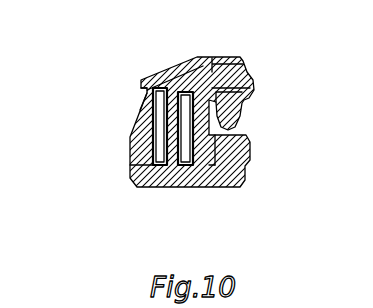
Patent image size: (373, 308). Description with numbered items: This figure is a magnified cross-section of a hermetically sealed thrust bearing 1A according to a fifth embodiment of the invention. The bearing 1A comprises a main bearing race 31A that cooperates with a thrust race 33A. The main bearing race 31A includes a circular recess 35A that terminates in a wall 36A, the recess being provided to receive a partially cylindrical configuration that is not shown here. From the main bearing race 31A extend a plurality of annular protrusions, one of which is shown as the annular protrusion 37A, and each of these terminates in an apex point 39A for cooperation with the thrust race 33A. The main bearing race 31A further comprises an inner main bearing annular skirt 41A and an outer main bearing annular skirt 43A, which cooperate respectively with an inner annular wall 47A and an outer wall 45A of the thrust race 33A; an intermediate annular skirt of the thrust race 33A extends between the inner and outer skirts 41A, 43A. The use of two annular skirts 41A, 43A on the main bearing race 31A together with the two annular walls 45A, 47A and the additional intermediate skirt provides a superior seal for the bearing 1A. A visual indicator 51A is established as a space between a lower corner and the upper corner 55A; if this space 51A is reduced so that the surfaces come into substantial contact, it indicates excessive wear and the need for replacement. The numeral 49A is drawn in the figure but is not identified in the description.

The bearing 1A is at (195, 40).
The main bearing race 31A is at (190, 57).
The thrust race 33A is at (133, 172).
The circular recess 35A is at (233, 77).
The wall 36A is at (221, 64).
The annular protrusion 37A is at (234, 114).
The apex point 39A is at (234, 126).
The inner main bearing annular skirt 41A is at (196, 187).
The outer main bearing annular skirt 43A is at (160, 187).
The outer wall 45A is at (143, 165).
The inner annular wall 47A is at (224, 188).
The left slot wall 49A is at (158, 129).
The visual indicator 51A is at (150, 108).
The upper corner 55A is at (147, 93).